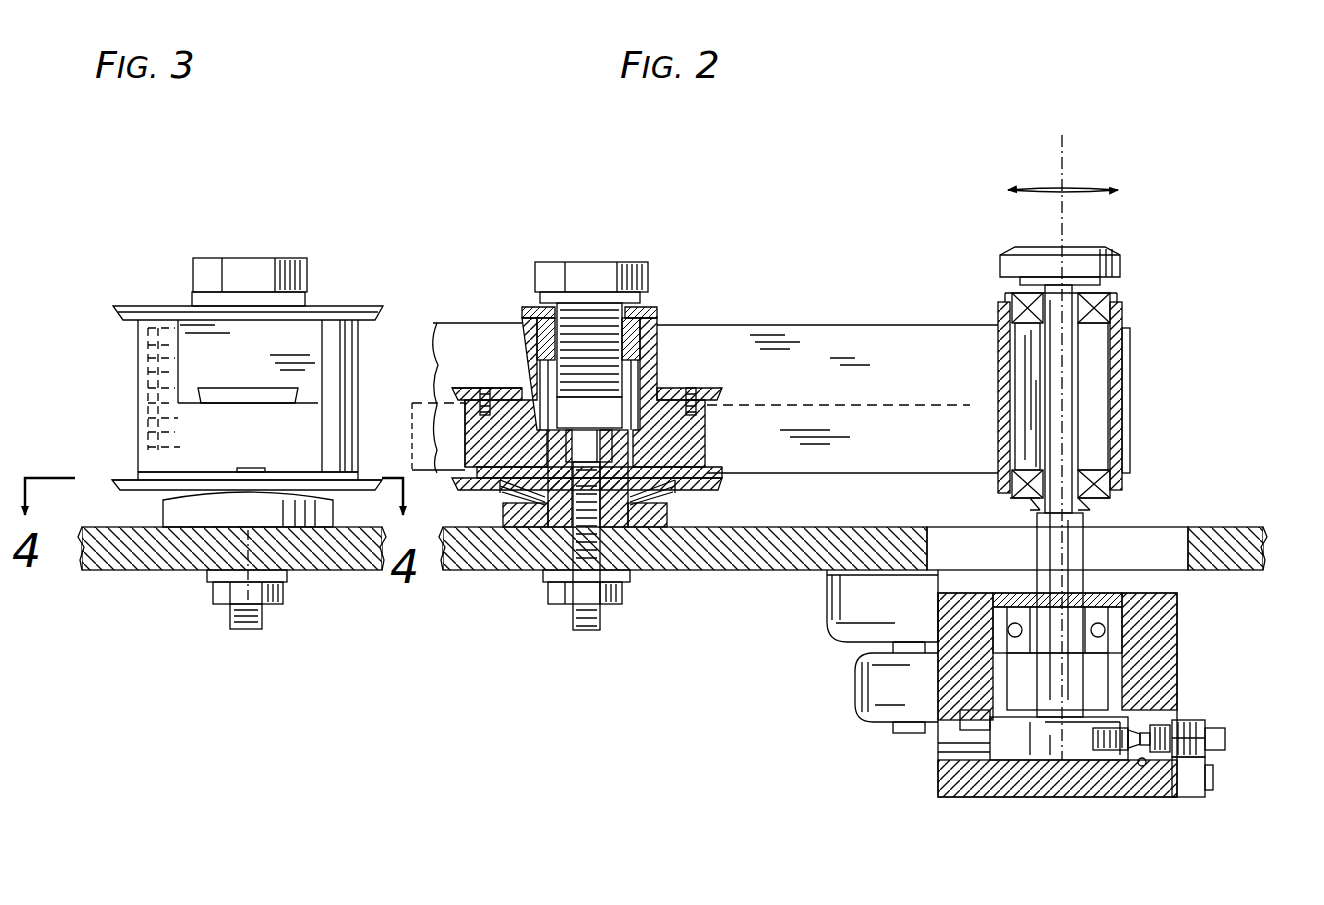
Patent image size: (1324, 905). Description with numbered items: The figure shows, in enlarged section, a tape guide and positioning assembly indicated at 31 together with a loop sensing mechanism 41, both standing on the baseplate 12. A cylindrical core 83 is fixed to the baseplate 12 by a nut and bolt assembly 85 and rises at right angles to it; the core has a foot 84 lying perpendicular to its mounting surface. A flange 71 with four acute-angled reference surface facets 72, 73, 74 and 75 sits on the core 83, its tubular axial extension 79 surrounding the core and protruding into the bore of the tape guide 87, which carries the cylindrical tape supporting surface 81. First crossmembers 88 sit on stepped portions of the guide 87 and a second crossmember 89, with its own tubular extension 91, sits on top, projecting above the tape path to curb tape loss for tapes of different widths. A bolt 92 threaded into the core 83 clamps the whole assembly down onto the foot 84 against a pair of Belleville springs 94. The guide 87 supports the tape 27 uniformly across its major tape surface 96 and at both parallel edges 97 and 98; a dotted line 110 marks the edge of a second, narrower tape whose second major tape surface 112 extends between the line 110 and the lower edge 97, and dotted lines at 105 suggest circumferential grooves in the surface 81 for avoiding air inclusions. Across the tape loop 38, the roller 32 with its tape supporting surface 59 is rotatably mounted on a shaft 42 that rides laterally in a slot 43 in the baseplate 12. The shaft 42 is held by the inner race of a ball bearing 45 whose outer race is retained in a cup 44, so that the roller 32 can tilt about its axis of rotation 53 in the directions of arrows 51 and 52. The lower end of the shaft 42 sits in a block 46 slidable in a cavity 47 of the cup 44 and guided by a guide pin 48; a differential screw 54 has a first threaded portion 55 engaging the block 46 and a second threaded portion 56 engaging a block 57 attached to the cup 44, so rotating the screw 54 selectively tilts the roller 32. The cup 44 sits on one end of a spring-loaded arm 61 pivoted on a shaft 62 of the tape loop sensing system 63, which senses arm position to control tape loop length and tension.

In FIG. 3, the baseplate 12 is at (82, 552).
In FIG. 2, the baseplate 12 is at (448, 552).
In FIG. 2, the tape 27 is at (456, 332).
In FIG. 3, the support assembly 31 is at (126, 296).
In FIG. 2, the support assembly 31 is at (680, 296).
In FIG. 2, the roller 32 is at (1128, 326).
In FIG. 2, the tape loop 38 is at (844, 345).
In FIG. 2, the loop sensing mechanism 41 is at (1114, 548).
In FIG. 2, the shaft 42 is at (1040, 550).
In FIG. 2, the slot 43 is at (1188, 571).
In FIG. 2, the cup 44 is at (1177, 652).
In FIG. 2, the ball bearing 45 is at (1115, 626).
In FIG. 2, the block 46 is at (1016, 760).
In FIG. 2, the cavity 47 is at (1140, 768).
In FIG. 2, the guide pin 48 is at (965, 760).
In FIG. 2, the arrow 51 is at (1040, 185).
In FIG. 2, the arrow 52 is at (1085, 190).
In FIG. 2, the axis of rotation 53 is at (1065, 165).
In FIG. 2, the differential screw 54 is at (1234, 736).
In FIG. 2, the first threaded portion 55 is at (1140, 728).
In FIG. 2, the second threaded portion 56 is at (1165, 725).
In FIG. 2, the block 57 is at (1200, 788).
In FIG. 2, the tape guiding or supporting surface 59 is at (998, 425).
In FIG. 2, the arm 61 is at (858, 698).
In FIG. 2, the shaft 62 is at (905, 734).
In FIG. 2, the tape loop sensing system 63 is at (826, 612).
In FIG. 3, the flange 71 is at (135, 482).
In FIG. 2, the flange 71 is at (702, 491).
In FIG. 3, the reference surface facet 72 is at (136, 472).
In FIG. 3, the reference surface facet 73 is at (256, 470).
In FIG. 2, the reference surface facet 73 is at (708, 470).
In FIG. 3, the reference surface facet 74 is at (362, 478).
In FIG. 2, the reference surface facet 75 is at (466, 470).
In FIG. 2, the tubular axial extension 79 is at (650, 455).
In FIG. 3, the tape supporting surface 81 is at (345, 428).
In FIG. 2, the core 83 is at (632, 522).
In FIG. 3, the foot 84 is at (322, 506).
In FIG. 2, the foot 84 is at (668, 512).
In FIG. 3, the nut and bolt assembly 85 is at (215, 598).
In FIG. 2, the nut and bolt assembly 85 is at (558, 600).
In FIG. 3, the tape guide 87 is at (360, 352).
In FIG. 2, the tape guide 87 is at (380, 340).
In FIG. 3, the first crossmembers 88 is at (258, 388).
In FIG. 2, the first crossmembers 88 is at (470, 388).
In FIG. 3, the second crossmember 89 is at (157, 306).
In FIG. 2, the second crossmember 89 is at (522, 307).
In FIG. 2, the tubular extension 91 is at (660, 345).
In FIG. 3, the bolt 92 is at (226, 260).
In FIG. 2, the bolt 92 is at (630, 262).
In FIG. 2, the Belleville springs 94 is at (502, 490).
In FIG. 2, the major tape surface 96 is at (908, 372).
In FIG. 2, the tape edge 97 is at (966, 475).
In FIG. 2, the tape edge 98 is at (922, 325).
In FIG. 3, the dashed region 105 is at (155, 375).
In FIG. 2, the dotted line 110 is at (866, 405).
In FIG. 2, the second major tape surface 112 is at (870, 455).